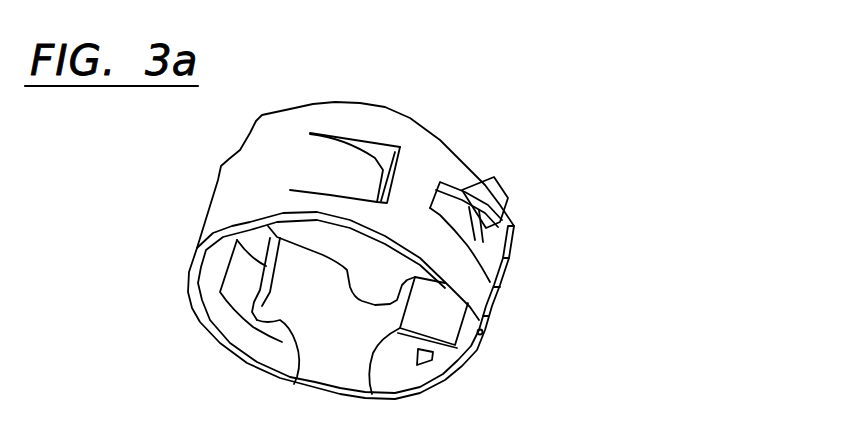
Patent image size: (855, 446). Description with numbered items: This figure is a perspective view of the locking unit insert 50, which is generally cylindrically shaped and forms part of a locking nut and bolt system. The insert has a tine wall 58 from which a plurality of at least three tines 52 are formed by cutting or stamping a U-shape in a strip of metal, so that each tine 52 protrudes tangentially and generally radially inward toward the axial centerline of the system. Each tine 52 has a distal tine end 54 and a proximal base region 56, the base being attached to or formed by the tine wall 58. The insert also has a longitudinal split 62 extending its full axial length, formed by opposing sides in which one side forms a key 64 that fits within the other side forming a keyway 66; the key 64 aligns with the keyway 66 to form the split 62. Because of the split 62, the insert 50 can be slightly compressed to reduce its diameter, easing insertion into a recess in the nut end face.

The locking unit insert 50 is at (310, 103).
The tine 52 is at (380, 157).
The distal tine end 54 is at (372, 395).
The proximal base region 56 is at (480, 332).
The tine wall 58 is at (488, 331).
The longitudinal split 62 is at (514, 222).
The key 64 is at (465, 205).
The keyway 66 is at (468, 190).